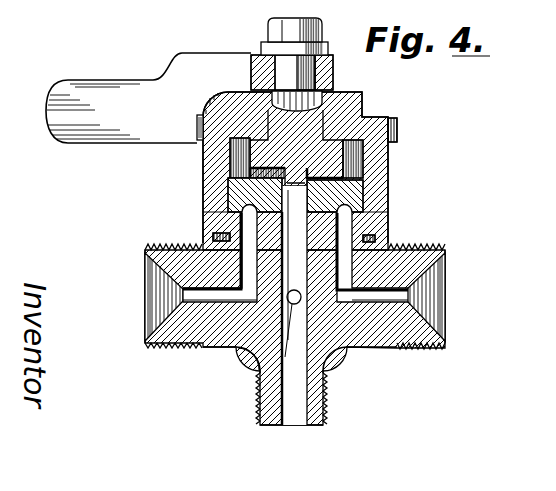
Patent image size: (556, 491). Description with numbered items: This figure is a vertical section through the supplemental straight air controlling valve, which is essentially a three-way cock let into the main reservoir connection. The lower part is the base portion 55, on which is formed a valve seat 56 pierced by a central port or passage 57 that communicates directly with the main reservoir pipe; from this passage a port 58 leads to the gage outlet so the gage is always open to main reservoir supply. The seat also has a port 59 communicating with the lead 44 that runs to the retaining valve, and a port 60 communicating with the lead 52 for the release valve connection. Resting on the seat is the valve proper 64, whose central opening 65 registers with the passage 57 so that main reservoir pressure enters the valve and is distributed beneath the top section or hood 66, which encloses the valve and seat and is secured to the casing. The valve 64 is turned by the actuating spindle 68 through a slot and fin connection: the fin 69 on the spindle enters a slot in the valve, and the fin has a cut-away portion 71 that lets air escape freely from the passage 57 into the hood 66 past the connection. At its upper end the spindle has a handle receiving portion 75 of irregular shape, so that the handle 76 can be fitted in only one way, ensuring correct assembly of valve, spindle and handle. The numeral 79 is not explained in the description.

The lead 44 is at (152, 273).
The lead 52 is at (446, 274).
The base portion 55 is at (357, 334).
The valve seat 56 is at (383, 248).
The central port or passage 57 is at (296, 393).
The port 58 is at (262, 358).
The port 59 is at (213, 236).
The port 60 is at (388, 221).
The valve proper 64 is at (315, 192).
The central opening 65 is at (230, 197).
The top section or hood 66 is at (356, 98).
The actuating spindle 68 is at (253, 77).
The fin 69 is at (230, 172).
The cut-away portion 71 is at (360, 184).
The handle receiving portion 75 is at (307, 72).
The handle 76 is at (95, 133).
The valve seat 79 is at (350, 218).